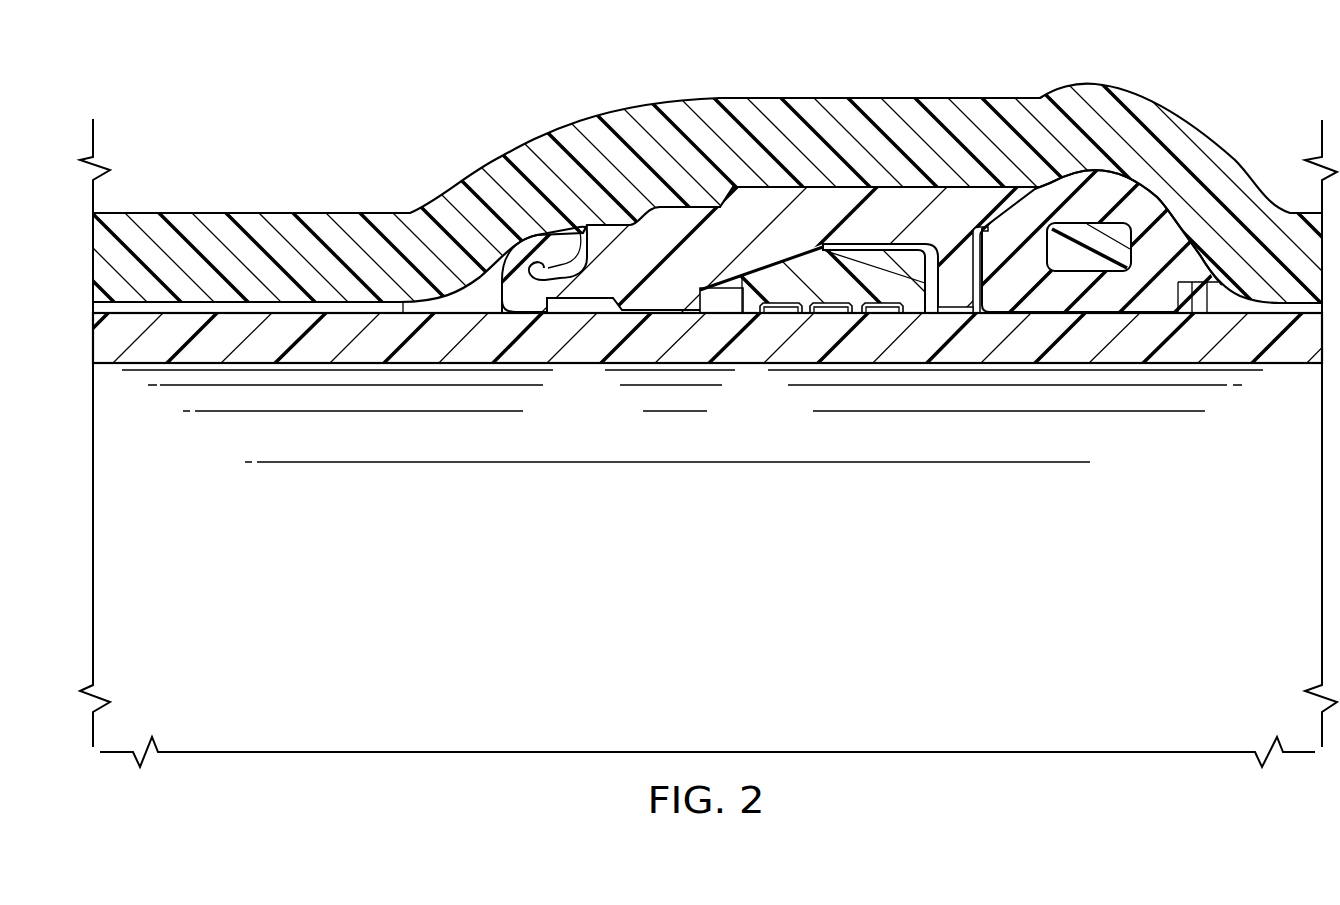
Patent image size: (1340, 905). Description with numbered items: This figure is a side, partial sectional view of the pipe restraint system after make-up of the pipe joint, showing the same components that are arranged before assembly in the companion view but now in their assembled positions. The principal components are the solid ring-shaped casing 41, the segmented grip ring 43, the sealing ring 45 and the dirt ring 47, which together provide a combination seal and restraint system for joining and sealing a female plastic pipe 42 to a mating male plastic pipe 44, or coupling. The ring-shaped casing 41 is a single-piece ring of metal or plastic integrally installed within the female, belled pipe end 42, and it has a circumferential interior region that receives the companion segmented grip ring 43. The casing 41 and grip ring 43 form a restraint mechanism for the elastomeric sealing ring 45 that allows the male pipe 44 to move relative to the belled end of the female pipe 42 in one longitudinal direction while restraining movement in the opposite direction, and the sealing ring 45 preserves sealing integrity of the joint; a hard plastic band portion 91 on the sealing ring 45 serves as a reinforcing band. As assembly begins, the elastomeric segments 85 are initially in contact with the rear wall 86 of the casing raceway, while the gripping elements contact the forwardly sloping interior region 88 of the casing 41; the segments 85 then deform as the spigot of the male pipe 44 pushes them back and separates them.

The ring-shaped casing 41 is at (768, 205).
The female plastic pipe 42 is at (958, 110).
The segmented grip ring 43 is at (810, 262).
The male plastic pipe 44 is at (102, 345).
The sealing ring 45 is at (1107, 190).
The dirt ring 47 is at (557, 305).
The elastomeric segments 85 is at (895, 253).
The rear wall of the casing raceway 86 is at (940, 277).
The forwardly sloping interior region 88 is at (773, 262).
The hard plastic band portion 91 is at (1120, 229).